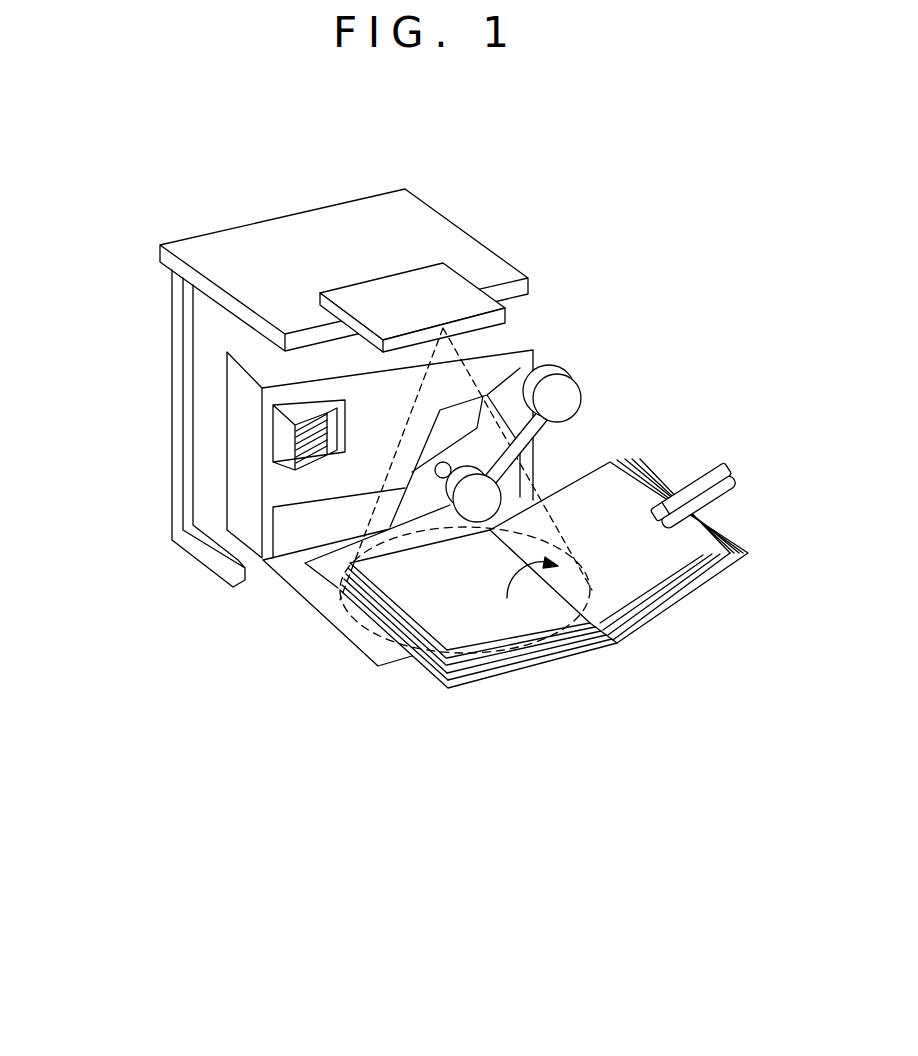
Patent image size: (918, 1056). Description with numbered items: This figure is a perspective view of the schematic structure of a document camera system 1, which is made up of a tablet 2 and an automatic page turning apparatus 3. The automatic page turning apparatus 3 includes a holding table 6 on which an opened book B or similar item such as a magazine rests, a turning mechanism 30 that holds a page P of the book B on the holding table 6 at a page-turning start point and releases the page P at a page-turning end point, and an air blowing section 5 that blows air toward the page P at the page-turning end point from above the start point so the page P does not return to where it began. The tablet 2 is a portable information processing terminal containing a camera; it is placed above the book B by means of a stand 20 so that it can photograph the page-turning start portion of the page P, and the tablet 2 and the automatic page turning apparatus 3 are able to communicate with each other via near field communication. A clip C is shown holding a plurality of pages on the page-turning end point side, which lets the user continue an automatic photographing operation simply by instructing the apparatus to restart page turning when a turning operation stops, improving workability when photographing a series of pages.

The document camera system 1 is at (401, 512).
The tablet 2 is at (420, 292).
The automatic page turning apparatus 3 is at (238, 420).
The air blowing section 5 is at (278, 454).
The holding table 6 is at (470, 677).
The stand 20 is at (242, 242).
The turning mechanism 30 is at (565, 372).
The book B is at (670, 582).
The clip C is at (727, 460).
The page P is at (503, 620).